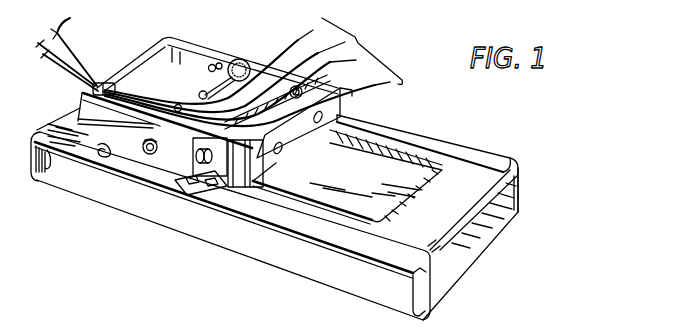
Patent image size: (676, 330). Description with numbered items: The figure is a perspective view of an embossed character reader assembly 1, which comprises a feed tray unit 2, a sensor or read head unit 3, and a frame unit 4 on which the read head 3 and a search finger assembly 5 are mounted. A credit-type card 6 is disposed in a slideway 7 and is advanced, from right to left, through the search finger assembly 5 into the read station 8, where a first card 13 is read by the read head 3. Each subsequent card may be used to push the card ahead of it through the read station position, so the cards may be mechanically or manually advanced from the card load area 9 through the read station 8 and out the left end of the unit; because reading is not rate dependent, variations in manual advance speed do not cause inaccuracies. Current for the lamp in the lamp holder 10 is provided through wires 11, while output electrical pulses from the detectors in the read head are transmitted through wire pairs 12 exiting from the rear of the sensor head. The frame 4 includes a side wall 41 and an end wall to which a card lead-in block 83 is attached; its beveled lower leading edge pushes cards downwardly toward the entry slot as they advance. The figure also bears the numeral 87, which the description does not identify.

The embossed character reader assembly 1 is at (226, 46).
The feed tray unit 2 is at (458, 134).
The read head unit 3 is at (184, 97).
The frame unit 4 is at (110, 130).
The search finger assembly 5 is at (337, 112).
The credit-type card 6 is at (370, 206).
The slideway 7 is at (518, 213).
The read station 8 is at (148, 78).
The card load area 9 is at (402, 146).
The lamp holder 10 is at (99, 83).
The wires 11 is at (70, 18).
The wire pairs 12 is at (254, 70).
The first card 13 is at (203, 93).
The side wall 41 is at (188, 157).
The card lead-in block 83 is at (316, 146).
The terminal bracket 87 is at (257, 182).